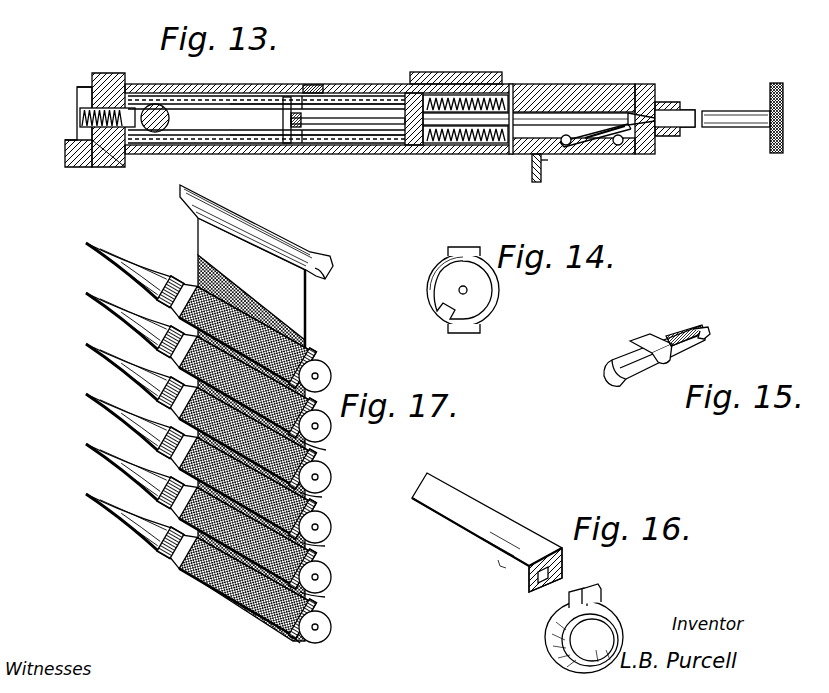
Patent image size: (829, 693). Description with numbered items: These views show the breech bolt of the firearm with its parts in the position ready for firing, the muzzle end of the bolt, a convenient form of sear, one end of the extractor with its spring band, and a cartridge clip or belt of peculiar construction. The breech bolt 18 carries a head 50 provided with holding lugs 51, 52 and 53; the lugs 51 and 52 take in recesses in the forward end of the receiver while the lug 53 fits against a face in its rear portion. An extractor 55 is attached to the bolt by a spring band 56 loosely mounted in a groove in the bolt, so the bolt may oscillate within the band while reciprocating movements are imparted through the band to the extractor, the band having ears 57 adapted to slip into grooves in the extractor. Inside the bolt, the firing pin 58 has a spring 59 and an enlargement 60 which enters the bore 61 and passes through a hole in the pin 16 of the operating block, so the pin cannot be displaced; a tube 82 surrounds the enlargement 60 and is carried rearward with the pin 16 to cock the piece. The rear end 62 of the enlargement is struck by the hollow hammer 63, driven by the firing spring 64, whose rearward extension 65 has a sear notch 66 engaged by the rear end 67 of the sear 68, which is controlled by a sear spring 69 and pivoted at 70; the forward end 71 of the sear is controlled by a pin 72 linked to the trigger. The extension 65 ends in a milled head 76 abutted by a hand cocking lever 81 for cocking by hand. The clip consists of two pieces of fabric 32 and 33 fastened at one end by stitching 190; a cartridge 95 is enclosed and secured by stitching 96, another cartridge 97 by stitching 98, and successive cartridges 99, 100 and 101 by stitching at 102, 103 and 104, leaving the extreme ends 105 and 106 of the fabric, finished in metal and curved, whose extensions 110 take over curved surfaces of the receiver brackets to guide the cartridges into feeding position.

In FIG. 13, the pin 16 is at (157, 132).
In FIG. 13, the breech bolt 18 is at (222, 154).
In FIG. 14, the breech bolt 18 is at (442, 277).
In FIG. 17, the piece of fabric 32 is at (307, 348).
In FIG. 17, the piece of fabric 33 is at (178, 572).
In FIG. 14, the head 50 is at (494, 298).
In FIG. 13, the holding lug 51 is at (128, 165).
In FIG. 14, the holding lug 51 is at (470, 331).
In FIG. 13, the holding lug 52 is at (112, 73).
In FIG. 14, the holding lug 52 is at (461, 250).
In FIG. 13, the holding lug 53 is at (480, 78).
In FIG. 16, the extractor 55 is at (496, 525).
In FIG. 13, the spring band 56 is at (322, 85).
In FIG. 16, the spring band 56 is at (548, 642).
In FIG. 16, the ears 57 is at (567, 602).
In FIG. 13, the firing pin 58 is at (88, 167).
In FIG. 13, the spring 59 is at (80, 127).
In FIG. 13, the enlargement 60 is at (291, 108).
In FIG. 13, the bore 61 is at (70, 148).
In FIG. 13, the rear end 62 is at (300, 127).
In FIG. 13, the hammer 63 is at (408, 137).
In FIG. 13, the firing spring 64 is at (455, 96).
In FIG. 13, the rearward extension 65 is at (592, 112).
In FIG. 13, the sear notch 66 is at (650, 100).
In FIG. 13, the rear end of sear 67 is at (660, 150).
In FIG. 15, the rear end of sear 67 is at (708, 330).
In FIG. 13, the sear 68 is at (596, 148).
In FIG. 15, the sear 68 is at (671, 338).
In FIG. 13, the sear spring 69 is at (620, 144).
In FIG. 13, the pivot 70 is at (570, 144).
In FIG. 15, the pivot 70 is at (651, 339).
In FIG. 13, the forward end of sear 71 is at (509, 148).
In FIG. 15, the forward end of sear 71 is at (612, 362).
In FIG. 13, the pin 72 is at (536, 182).
In FIG. 13, the milled head 76 is at (776, 138).
In FIG. 13, the hand cocking lever 81 is at (682, 108).
In FIG. 13, the tube 82 is at (270, 120).
In FIG. 17, the cartridge 95 is at (333, 628).
In FIG. 17, the stitching 96 is at (322, 597).
In FIG. 17, the cartridge 97 is at (333, 577).
In FIG. 17, the stitching 98 is at (322, 547).
In FIG. 17, the cartridge 99 is at (333, 527).
In FIG. 17, the cartridge 100 is at (333, 477).
In FIG. 17, the cartridge 101 is at (332, 429).
In FIG. 17, the stitching 102 is at (318, 497).
In FIG. 17, the stitching 103 is at (312, 447).
In FIG. 17, the stitching 104 is at (328, 390).
In FIG. 17, the extreme end of fabric 105 is at (306, 329).
In FIG. 17, the extreme end of fabric 106 is at (298, 226).
In FIG. 17, the extensions 110 is at (318, 280).
In FIG. 17, the stitching 190 is at (300, 643).